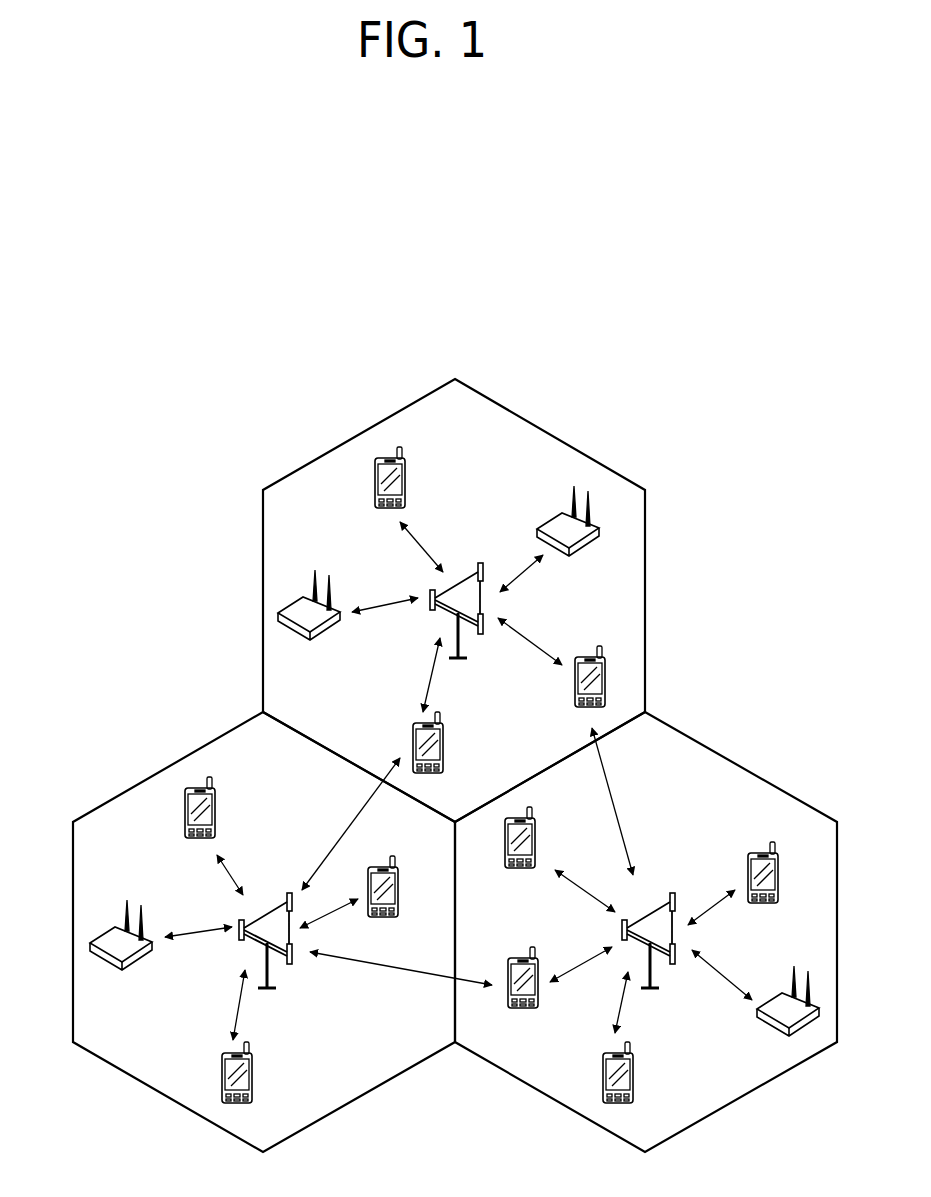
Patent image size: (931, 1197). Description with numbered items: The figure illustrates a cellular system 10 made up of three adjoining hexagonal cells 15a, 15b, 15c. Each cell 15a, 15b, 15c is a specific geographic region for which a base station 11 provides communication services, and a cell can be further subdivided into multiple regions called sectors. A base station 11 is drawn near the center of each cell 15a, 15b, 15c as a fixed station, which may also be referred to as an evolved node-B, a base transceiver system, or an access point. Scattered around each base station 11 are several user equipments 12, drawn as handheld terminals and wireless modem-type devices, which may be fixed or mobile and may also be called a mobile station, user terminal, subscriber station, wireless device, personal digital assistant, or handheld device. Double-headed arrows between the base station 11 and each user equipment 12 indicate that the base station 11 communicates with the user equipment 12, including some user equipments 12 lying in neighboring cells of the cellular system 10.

The cellular system 10 is at (727, 495).
The base station 11 is at (470, 575).
The user equipment 12 is at (406, 478).
The cell 15a is at (645, 590).
The cell 15b is at (765, 778).
The cell 15c is at (143, 778).